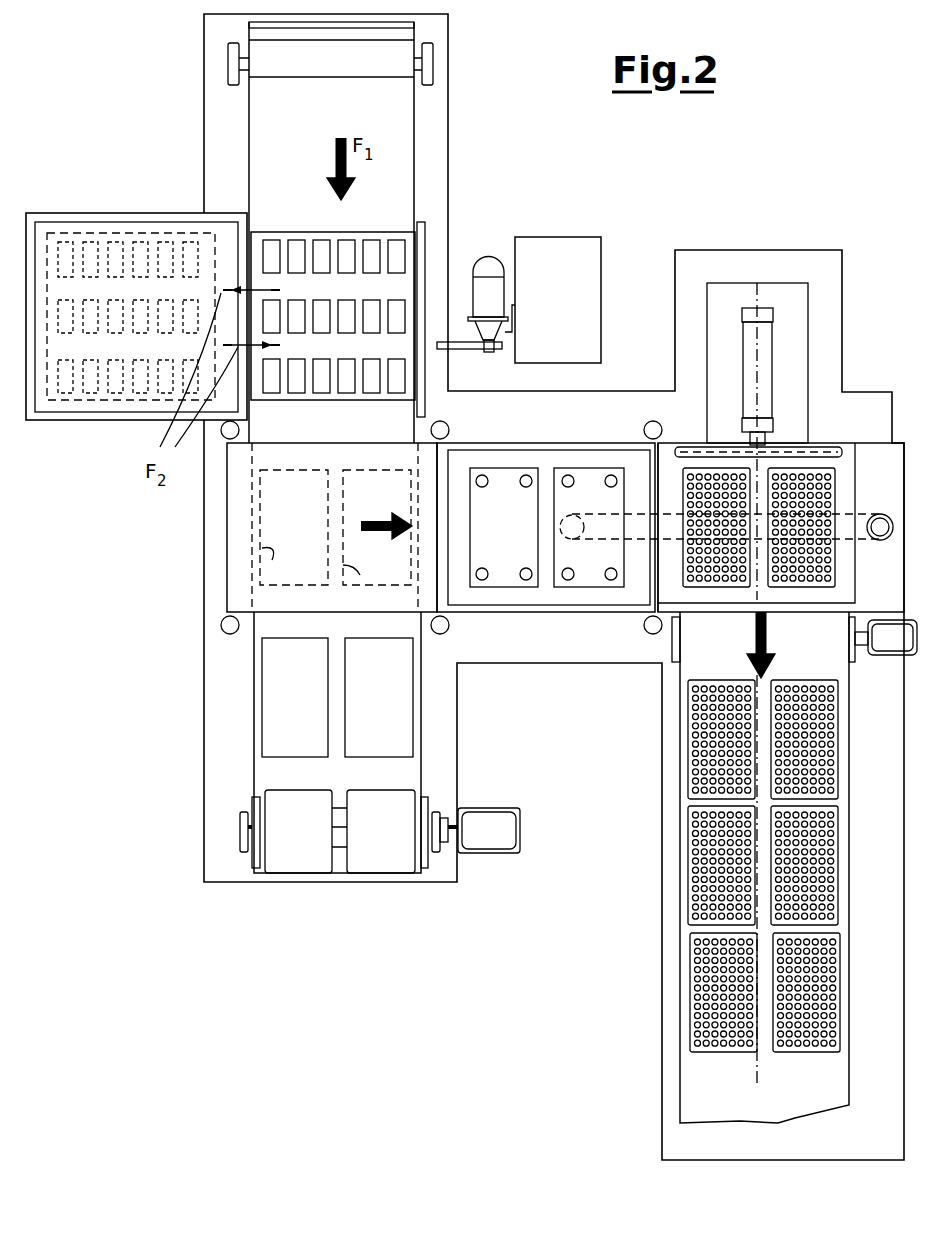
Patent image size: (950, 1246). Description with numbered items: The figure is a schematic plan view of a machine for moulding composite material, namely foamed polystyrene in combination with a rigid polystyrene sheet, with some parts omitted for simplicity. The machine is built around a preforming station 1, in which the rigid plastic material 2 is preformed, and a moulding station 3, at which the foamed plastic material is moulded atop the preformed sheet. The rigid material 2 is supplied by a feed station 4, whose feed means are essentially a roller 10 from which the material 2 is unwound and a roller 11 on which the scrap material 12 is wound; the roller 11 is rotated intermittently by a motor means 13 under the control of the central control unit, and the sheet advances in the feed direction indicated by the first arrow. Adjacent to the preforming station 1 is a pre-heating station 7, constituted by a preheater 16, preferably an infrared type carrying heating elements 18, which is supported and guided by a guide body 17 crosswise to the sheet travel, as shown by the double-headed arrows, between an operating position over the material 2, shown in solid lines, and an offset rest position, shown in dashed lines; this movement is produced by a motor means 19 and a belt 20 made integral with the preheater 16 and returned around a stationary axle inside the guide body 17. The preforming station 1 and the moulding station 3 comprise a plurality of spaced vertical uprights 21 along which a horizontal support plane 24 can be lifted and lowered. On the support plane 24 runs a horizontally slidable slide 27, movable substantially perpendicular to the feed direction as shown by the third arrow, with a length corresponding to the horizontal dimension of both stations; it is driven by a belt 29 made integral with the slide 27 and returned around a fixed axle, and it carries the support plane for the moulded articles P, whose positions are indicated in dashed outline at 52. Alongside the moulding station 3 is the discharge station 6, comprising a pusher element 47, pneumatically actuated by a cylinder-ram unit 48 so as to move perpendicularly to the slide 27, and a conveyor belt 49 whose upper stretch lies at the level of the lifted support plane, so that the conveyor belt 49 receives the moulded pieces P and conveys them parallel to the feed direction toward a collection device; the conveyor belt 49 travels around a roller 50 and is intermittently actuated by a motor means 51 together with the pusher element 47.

The preforming station 1 is at (183, 548).
The rigid plastic material 2 is at (407, 429).
The moulding station 3 is at (535, 620).
The feed station 4 is at (420, 204).
The discharge station 6 is at (904, 436).
The pre-heating station 7 is at (431, 271).
The roller 10 is at (415, 66).
The roller 11 is at (425, 862).
The scrap material 12 is at (262, 770).
The motor means 13 is at (495, 842).
The preheater 16 is at (360, 232).
The guide body 17 is at (235, 232).
The heating elements 18 is at (325, 255).
The motor means 19 is at (490, 272).
The belt 20 is at (459, 351).
The vertical uprights 21 is at (226, 438).
The horizontal support plane 24 is at (223, 550).
The slide 27 is at (572, 613).
The belt 29 is at (866, 513).
The pusher element 47 is at (826, 452).
The cylinder-ram unit 48 is at (762, 343).
The conveyor belt 49 is at (820, 652).
The roller 50 is at (848, 645).
The motor means 51 is at (887, 628).
The tray position 52 is at (245, 572).
The moulded articles P is at (705, 893).